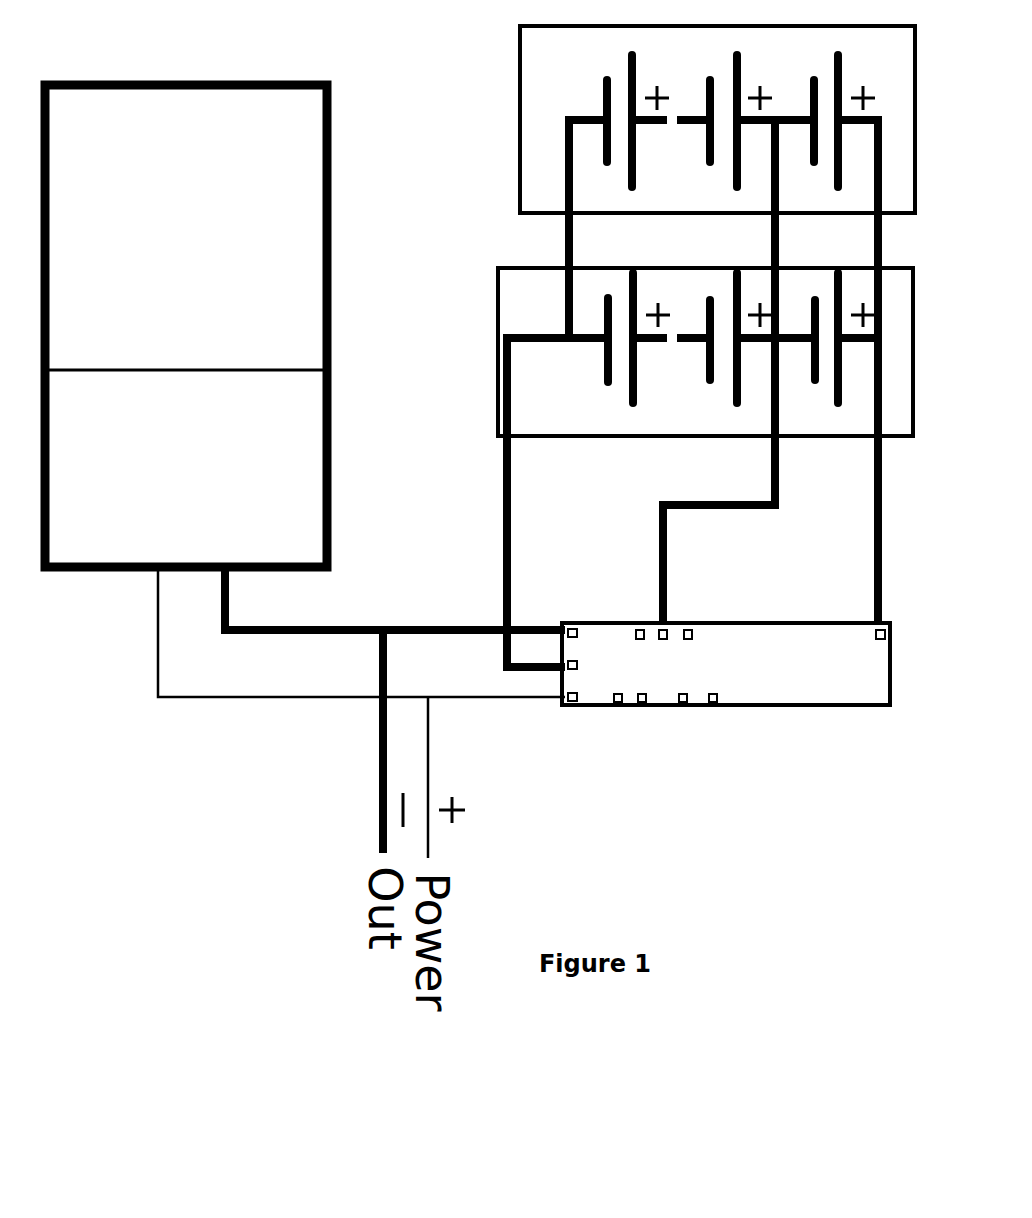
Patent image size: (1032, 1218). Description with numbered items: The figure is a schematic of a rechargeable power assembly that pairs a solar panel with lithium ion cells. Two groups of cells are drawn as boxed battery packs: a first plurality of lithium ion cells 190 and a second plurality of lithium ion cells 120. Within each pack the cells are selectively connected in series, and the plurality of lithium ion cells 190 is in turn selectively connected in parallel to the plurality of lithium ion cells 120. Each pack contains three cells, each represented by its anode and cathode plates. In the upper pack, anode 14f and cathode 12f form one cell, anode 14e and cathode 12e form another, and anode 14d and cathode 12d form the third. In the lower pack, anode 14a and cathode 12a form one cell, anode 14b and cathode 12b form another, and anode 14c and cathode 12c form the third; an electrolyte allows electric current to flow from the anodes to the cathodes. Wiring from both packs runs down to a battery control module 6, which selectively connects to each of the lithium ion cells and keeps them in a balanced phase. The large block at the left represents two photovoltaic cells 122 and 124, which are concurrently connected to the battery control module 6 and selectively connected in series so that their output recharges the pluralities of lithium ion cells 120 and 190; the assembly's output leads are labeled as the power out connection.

The battery control module 6 is at (742, 706).
The cathode 12a is at (815, 308).
The cathode 12b is at (710, 302).
The cathode 12c is at (607, 298).
The cathode 12d is at (606, 80).
The cathode 12e is at (710, 80).
The cathode 12f is at (814, 82).
The anode 14a is at (843, 407).
The anode 14b is at (737, 403).
The anode 14c is at (633, 403).
The anode 14d is at (632, 187).
The anode 14e is at (737, 187).
The anode 14f is at (838, 187).
The plurality of lithium ion cells 120 is at (497, 287).
The photovoltaic cell 122 is at (186, 227).
The photovoltaic cell 124 is at (186, 468).
The plurality of lithium ion cells 190 is at (518, 97).